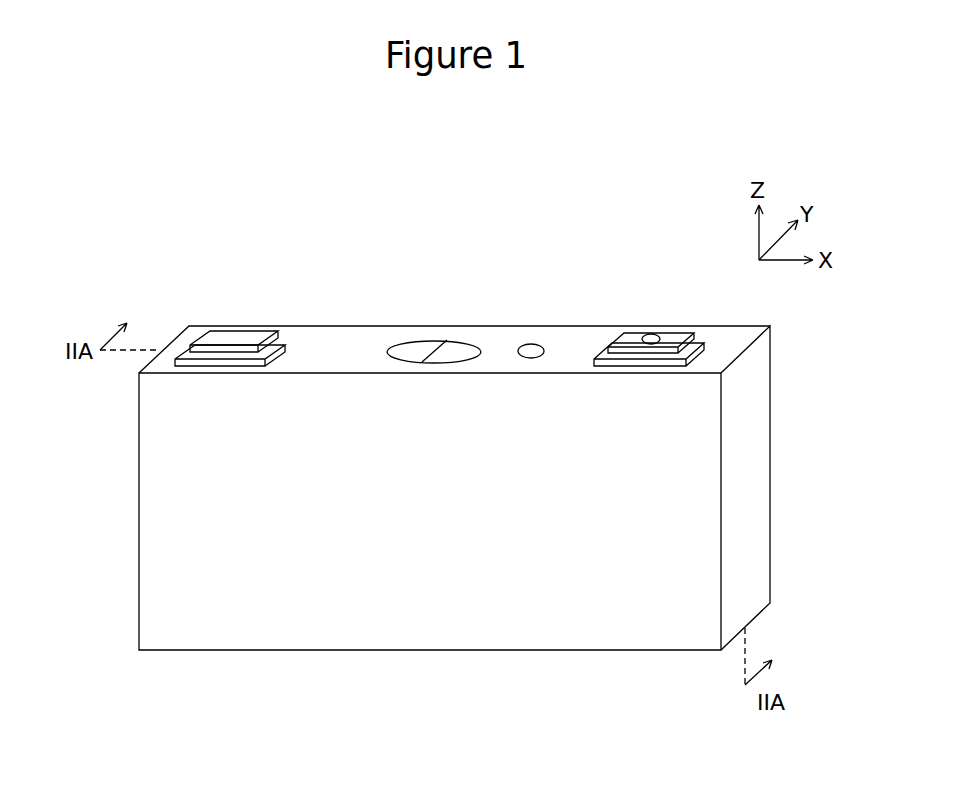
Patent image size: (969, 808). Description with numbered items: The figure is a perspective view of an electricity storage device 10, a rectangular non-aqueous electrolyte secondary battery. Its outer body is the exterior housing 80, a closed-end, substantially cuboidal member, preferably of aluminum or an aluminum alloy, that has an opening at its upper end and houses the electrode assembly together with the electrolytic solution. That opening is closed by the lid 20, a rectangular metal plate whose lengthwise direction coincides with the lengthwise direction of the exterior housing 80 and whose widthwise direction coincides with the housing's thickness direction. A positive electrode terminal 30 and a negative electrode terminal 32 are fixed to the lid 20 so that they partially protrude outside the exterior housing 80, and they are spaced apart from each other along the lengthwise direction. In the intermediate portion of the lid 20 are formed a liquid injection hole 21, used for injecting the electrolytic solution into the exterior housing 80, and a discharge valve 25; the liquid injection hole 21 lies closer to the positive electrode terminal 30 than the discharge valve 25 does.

The electricity storage device 10 is at (482, 419).
The lid 20 is at (330, 348).
The liquid injection hole 21 is at (530, 351).
The discharge valve 25 is at (418, 352).
The positive electrode terminal 30 is at (673, 343).
The negative electrode terminal 32 is at (235, 343).
The exterior housing 80 is at (746, 430).